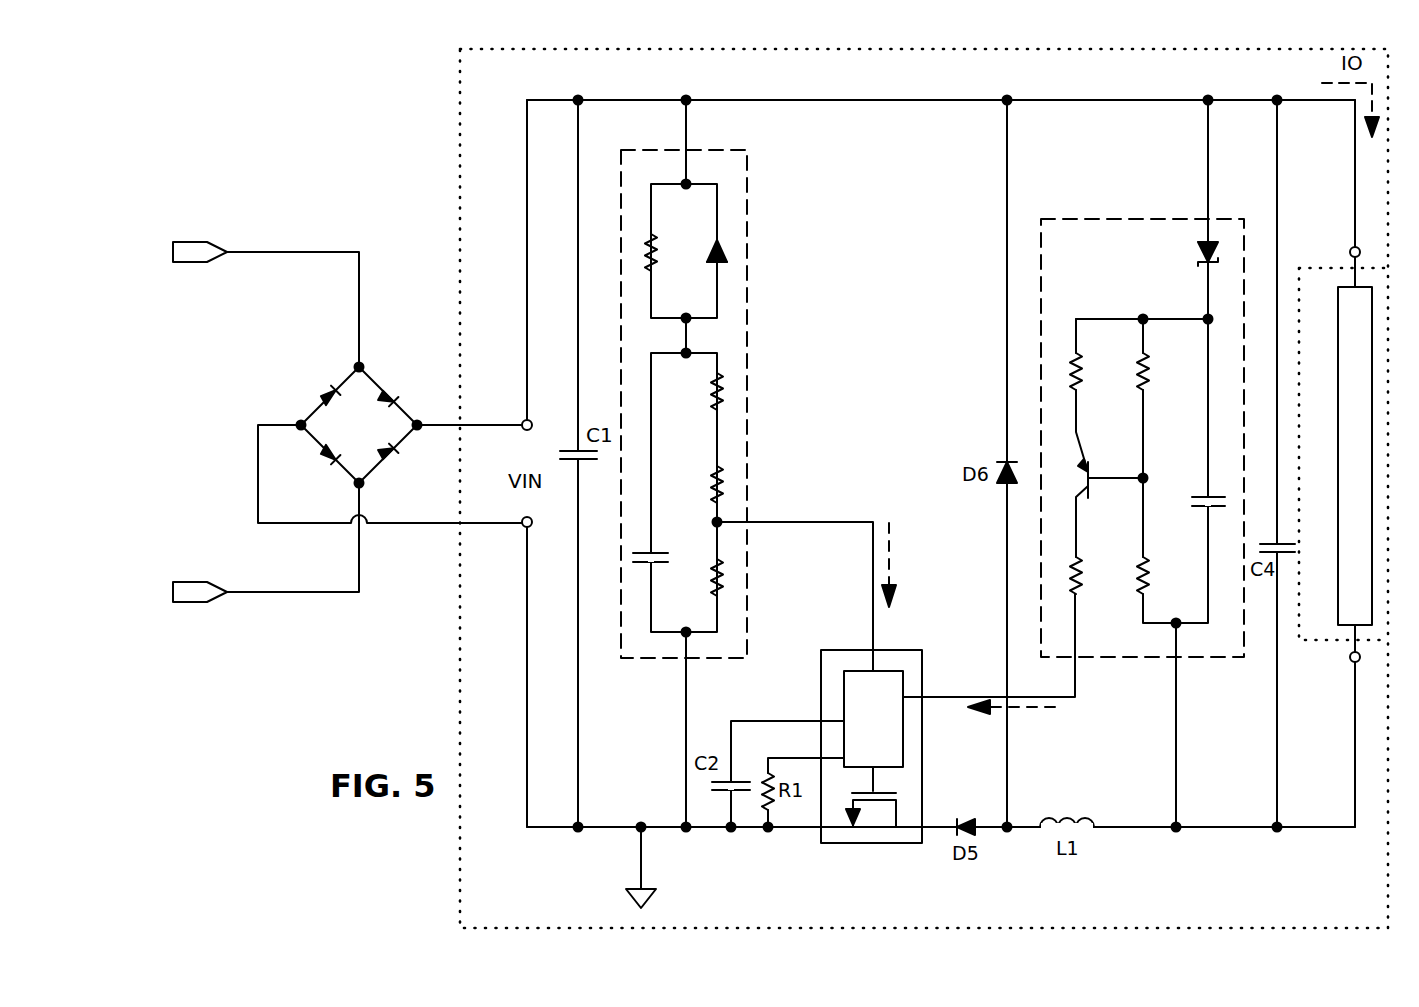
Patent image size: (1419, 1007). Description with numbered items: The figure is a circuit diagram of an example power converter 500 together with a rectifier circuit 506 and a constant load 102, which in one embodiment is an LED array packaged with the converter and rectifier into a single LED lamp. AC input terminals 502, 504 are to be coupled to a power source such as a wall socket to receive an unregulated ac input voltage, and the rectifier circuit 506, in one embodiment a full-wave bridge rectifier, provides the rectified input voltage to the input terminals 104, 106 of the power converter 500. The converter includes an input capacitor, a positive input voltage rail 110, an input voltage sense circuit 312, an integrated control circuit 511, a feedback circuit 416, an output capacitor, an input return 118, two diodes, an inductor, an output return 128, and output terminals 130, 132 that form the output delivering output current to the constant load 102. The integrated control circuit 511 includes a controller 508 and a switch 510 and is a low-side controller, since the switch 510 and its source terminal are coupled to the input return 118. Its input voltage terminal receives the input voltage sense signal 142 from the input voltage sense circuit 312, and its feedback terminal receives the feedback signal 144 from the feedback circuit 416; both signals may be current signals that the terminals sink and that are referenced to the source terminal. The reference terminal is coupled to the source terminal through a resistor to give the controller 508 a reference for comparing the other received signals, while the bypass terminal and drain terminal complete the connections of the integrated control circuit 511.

The power converter 500 is at (457, 130).
The ac input terminal 502 is at (178, 224).
The ac input terminal 504 is at (193, 612).
The rectifier circuit 506 is at (373, 365).
The input terminal 104 is at (520, 418).
The input terminal 106 is at (520, 535).
The positive input voltage rail 110 is at (900, 107).
The input voltage sense circuit 312 is at (752, 200).
The input voltage sense signal 142 is at (903, 550).
The integrated control circuit 511 is at (912, 640).
The controller 508 is at (873, 719).
The switch 510 is at (882, 815).
The feedback signal 144 is at (1045, 712).
The input return 118 is at (653, 870).
The output return 128 is at (1220, 832).
The feedback circuit 416 is at (1087, 210).
The output terminal 130 is at (1348, 245).
The constant load 102 is at (1325, 378).
The output terminal 132 is at (1350, 668).